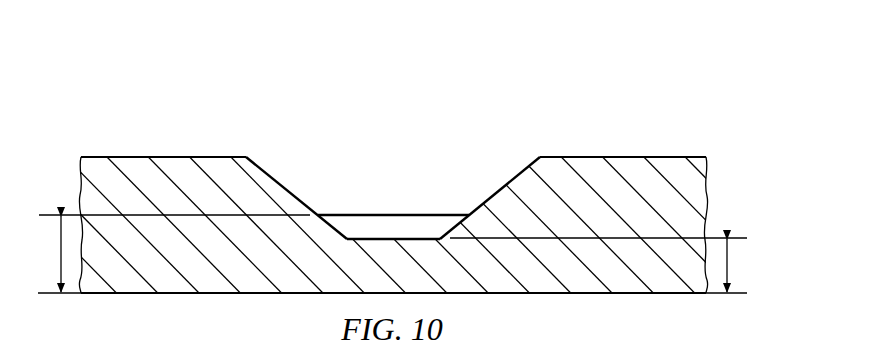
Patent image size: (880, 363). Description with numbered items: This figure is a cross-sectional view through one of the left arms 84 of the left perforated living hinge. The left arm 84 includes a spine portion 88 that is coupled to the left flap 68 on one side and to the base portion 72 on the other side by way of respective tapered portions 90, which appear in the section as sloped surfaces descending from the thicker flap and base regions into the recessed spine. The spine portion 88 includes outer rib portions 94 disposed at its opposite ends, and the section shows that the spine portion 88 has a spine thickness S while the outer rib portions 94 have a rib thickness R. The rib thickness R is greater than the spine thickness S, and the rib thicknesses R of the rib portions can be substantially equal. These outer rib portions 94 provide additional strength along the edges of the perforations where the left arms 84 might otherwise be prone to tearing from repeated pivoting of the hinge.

The left arm 84 is at (430, 173).
The left flap 68 is at (165, 157).
The base portion 72 is at (621, 157).
The tapered portion 90 is at (276, 181).
The outer rib portion 94 is at (358, 214).
The spine portion 88 is at (408, 238).
The rib thickness R is at (61, 256).
The spine thickness S is at (727, 263).